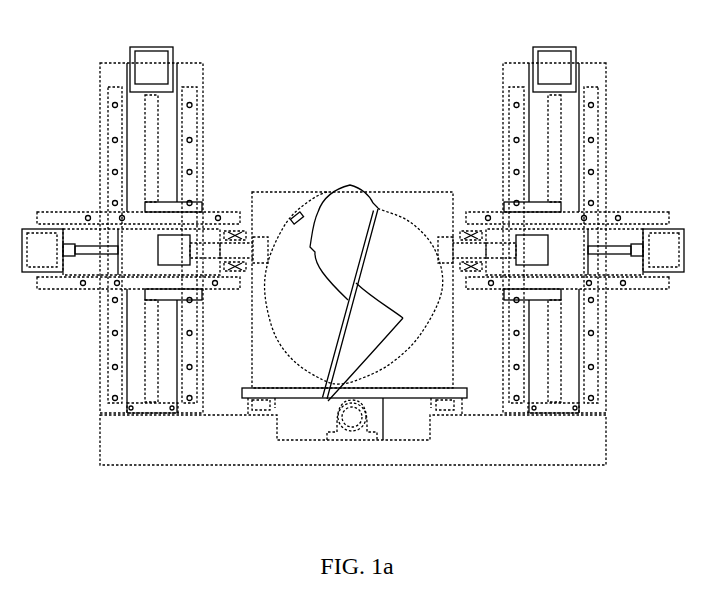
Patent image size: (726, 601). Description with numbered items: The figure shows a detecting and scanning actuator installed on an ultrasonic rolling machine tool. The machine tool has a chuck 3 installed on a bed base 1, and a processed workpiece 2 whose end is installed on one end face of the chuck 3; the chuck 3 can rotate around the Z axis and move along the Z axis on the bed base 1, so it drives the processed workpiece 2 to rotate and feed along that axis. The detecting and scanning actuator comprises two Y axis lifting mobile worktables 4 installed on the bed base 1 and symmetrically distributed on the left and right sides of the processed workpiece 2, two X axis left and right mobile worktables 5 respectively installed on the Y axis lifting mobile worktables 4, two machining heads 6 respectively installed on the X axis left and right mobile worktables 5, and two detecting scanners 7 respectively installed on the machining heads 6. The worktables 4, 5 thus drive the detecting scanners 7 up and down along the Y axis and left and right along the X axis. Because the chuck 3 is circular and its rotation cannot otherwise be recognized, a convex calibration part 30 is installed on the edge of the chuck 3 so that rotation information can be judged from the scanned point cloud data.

The bed base 1 is at (522, 442).
The processed workpiece 2 is at (355, 337).
The chuck 3 is at (298, 325).
The Y axis lifting mobile worktable 4 is at (537, 160).
The X axis left and right mobile worktable 5 is at (537, 212).
The machining head 6 is at (456, 252).
The detecting scanner 7 is at (507, 250).
The convex calibration part 30 is at (300, 216).